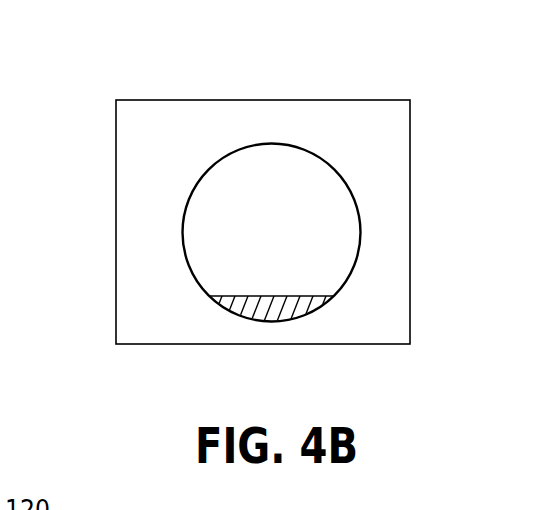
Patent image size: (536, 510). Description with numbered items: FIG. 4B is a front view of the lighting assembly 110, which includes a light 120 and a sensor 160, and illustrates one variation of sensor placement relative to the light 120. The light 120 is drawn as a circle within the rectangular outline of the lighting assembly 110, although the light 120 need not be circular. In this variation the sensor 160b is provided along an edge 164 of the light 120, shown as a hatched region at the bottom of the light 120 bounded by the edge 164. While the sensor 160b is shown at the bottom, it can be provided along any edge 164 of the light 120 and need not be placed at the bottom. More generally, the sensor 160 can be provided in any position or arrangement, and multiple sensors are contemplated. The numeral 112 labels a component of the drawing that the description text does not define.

The lighting assembly 110 is at (482, 56).
The substrate 112 is at (130, 133).
The light 120 is at (256, 214).
The edge 164 is at (353, 195).
The sensor 160 is at (251, 336).
The sensor 160b is at (262, 308).